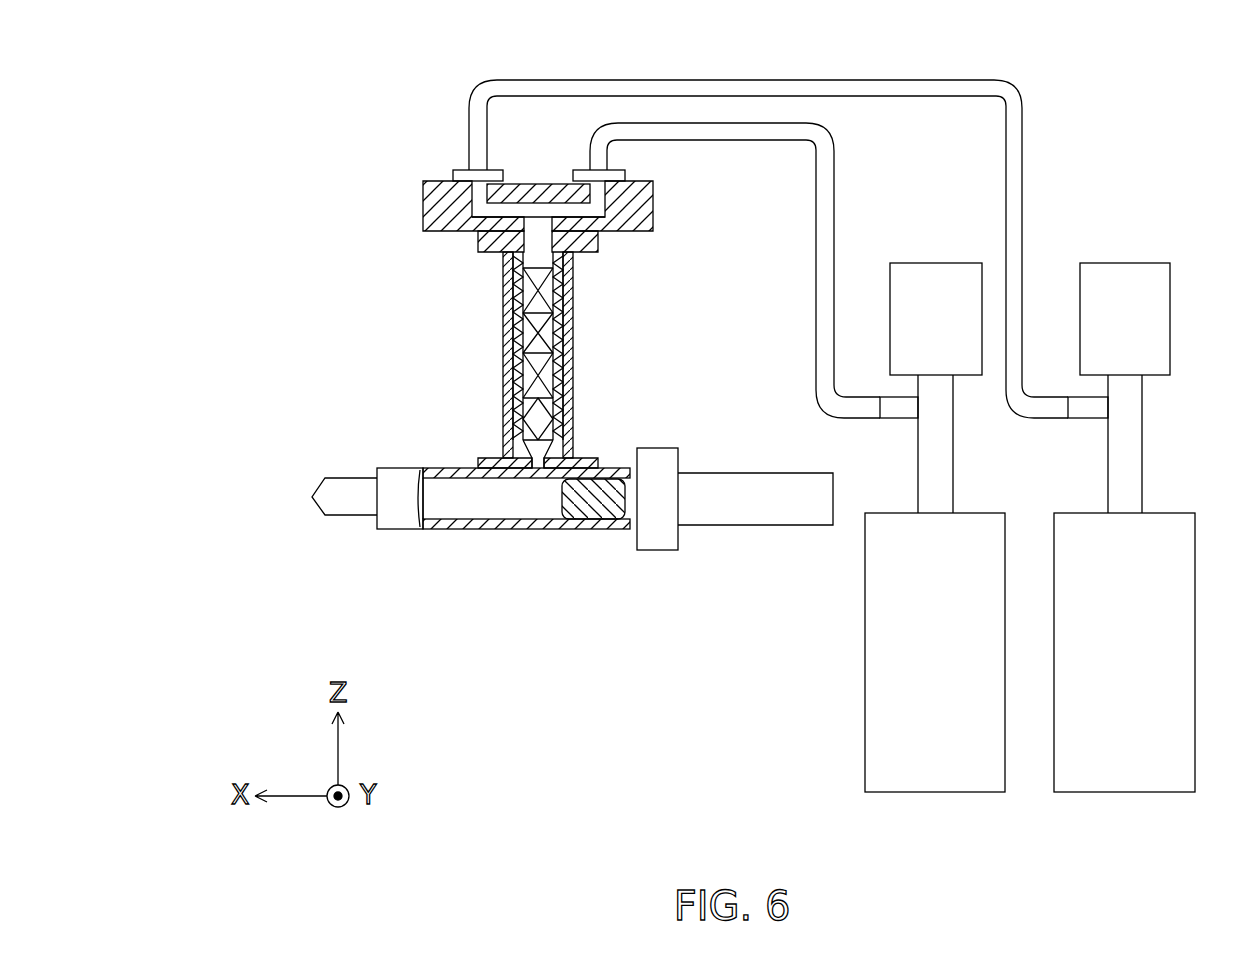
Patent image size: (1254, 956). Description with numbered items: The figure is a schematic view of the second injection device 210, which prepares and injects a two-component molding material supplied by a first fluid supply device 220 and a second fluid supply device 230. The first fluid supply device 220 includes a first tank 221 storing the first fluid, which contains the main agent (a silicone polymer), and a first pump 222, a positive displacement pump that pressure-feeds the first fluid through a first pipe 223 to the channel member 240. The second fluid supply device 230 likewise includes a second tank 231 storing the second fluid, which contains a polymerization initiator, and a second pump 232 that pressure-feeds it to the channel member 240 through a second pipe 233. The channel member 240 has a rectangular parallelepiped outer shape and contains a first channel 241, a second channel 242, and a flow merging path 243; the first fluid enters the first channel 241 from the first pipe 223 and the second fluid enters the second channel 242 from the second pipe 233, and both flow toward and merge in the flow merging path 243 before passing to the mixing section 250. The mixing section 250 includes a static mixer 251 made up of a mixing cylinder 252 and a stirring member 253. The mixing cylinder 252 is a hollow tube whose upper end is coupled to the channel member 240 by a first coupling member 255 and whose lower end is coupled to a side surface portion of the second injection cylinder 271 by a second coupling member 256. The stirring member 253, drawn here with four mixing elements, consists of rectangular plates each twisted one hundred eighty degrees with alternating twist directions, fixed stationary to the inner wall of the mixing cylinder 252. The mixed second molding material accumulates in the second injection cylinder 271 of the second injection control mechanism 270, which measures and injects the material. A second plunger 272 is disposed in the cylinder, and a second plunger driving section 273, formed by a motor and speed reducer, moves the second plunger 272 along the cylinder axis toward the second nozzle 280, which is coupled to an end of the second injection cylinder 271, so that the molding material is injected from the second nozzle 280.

The second injection device 210 is at (267, 116).
The first fluid supply device 220 is at (1191, 424).
The first tank 221 is at (1107, 792).
The first pump 222 is at (1122, 263).
The first pipe 223 is at (1023, 158).
The second fluid supply device 230 is at (845, 620).
The second tank 231 is at (920, 792).
The second pump 232 is at (932, 263).
The second pipe 233 is at (836, 158).
The channel member 240 is at (437, 178).
The first channel 241 is at (450, 198).
The second channel 242 is at (577, 197).
The flow merging path 243 is at (553, 222).
The mixing section 250 is at (408, 334).
The static mixer 251 is at (688, 290).
The mixing cylinder 252 is at (557, 297).
The stirring member 253 is at (557, 323).
The first coupling member 255 is at (487, 252).
The second coupling member 256 is at (503, 418).
The second injection control mechanism 270 is at (748, 402).
The second injection cylinder 271 is at (462, 468).
The second plunger 272 is at (612, 480).
The second plunger driving section 273 is at (740, 473).
The second nozzle 280 is at (330, 478).